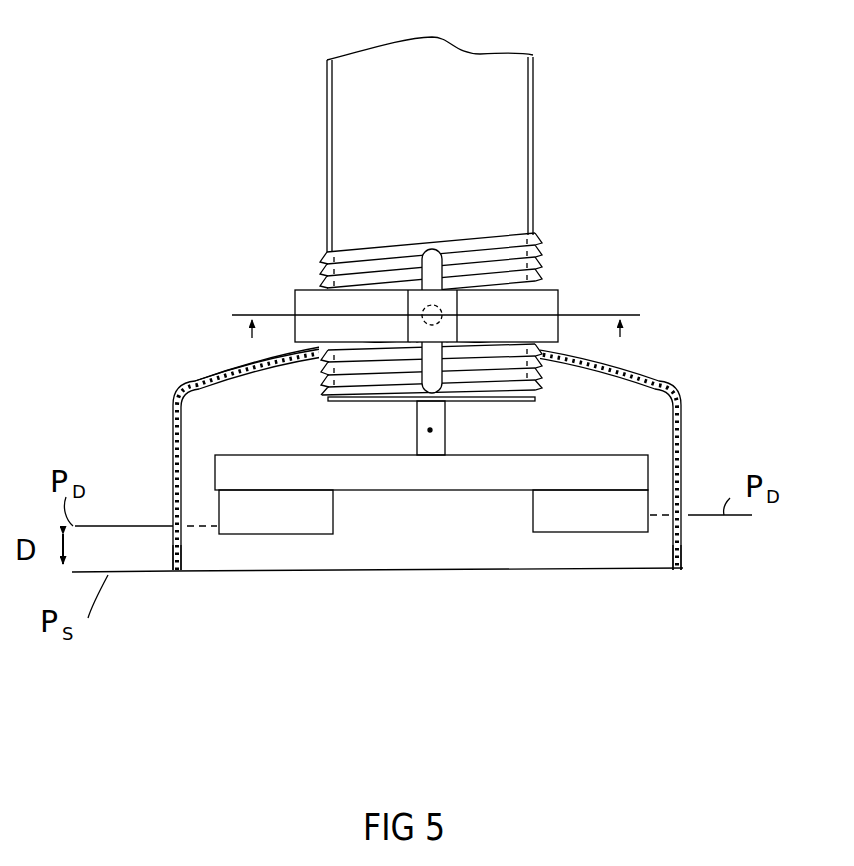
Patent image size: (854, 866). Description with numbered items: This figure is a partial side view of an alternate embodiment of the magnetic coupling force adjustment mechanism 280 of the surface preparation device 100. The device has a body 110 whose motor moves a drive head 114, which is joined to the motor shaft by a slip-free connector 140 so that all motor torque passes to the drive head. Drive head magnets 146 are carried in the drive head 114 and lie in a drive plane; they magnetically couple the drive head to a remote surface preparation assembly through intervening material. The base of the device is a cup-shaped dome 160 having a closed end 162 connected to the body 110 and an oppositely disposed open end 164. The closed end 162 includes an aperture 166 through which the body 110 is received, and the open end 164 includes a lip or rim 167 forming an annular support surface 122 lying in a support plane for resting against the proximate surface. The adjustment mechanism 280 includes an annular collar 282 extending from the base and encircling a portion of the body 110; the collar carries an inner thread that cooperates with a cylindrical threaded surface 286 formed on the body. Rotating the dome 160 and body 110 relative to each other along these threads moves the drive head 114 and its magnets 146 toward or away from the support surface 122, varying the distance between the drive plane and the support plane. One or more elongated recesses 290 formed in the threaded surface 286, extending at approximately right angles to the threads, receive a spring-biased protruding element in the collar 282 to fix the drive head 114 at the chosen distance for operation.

The surface preparation device 100 is at (224, 121).
The body 110 is at (533, 170).
The drive head 114 is at (275, 455).
The support surface 122 is at (175, 575).
The connector 140 is at (446, 438).
The drive head magnets 146 is at (433, 512).
The cup-shaped dome 160 is at (687, 407).
The closed end 162 is at (207, 363).
The open end 164 is at (683, 570).
The aperture 166 is at (323, 362).
The lip or rim 167 is at (420, 570).
The adjustment mechanism 280 is at (423, 295).
The annular collar 282 is at (558, 302).
The threaded surface 286 is at (538, 257).
The elongated recess 290 is at (433, 249).